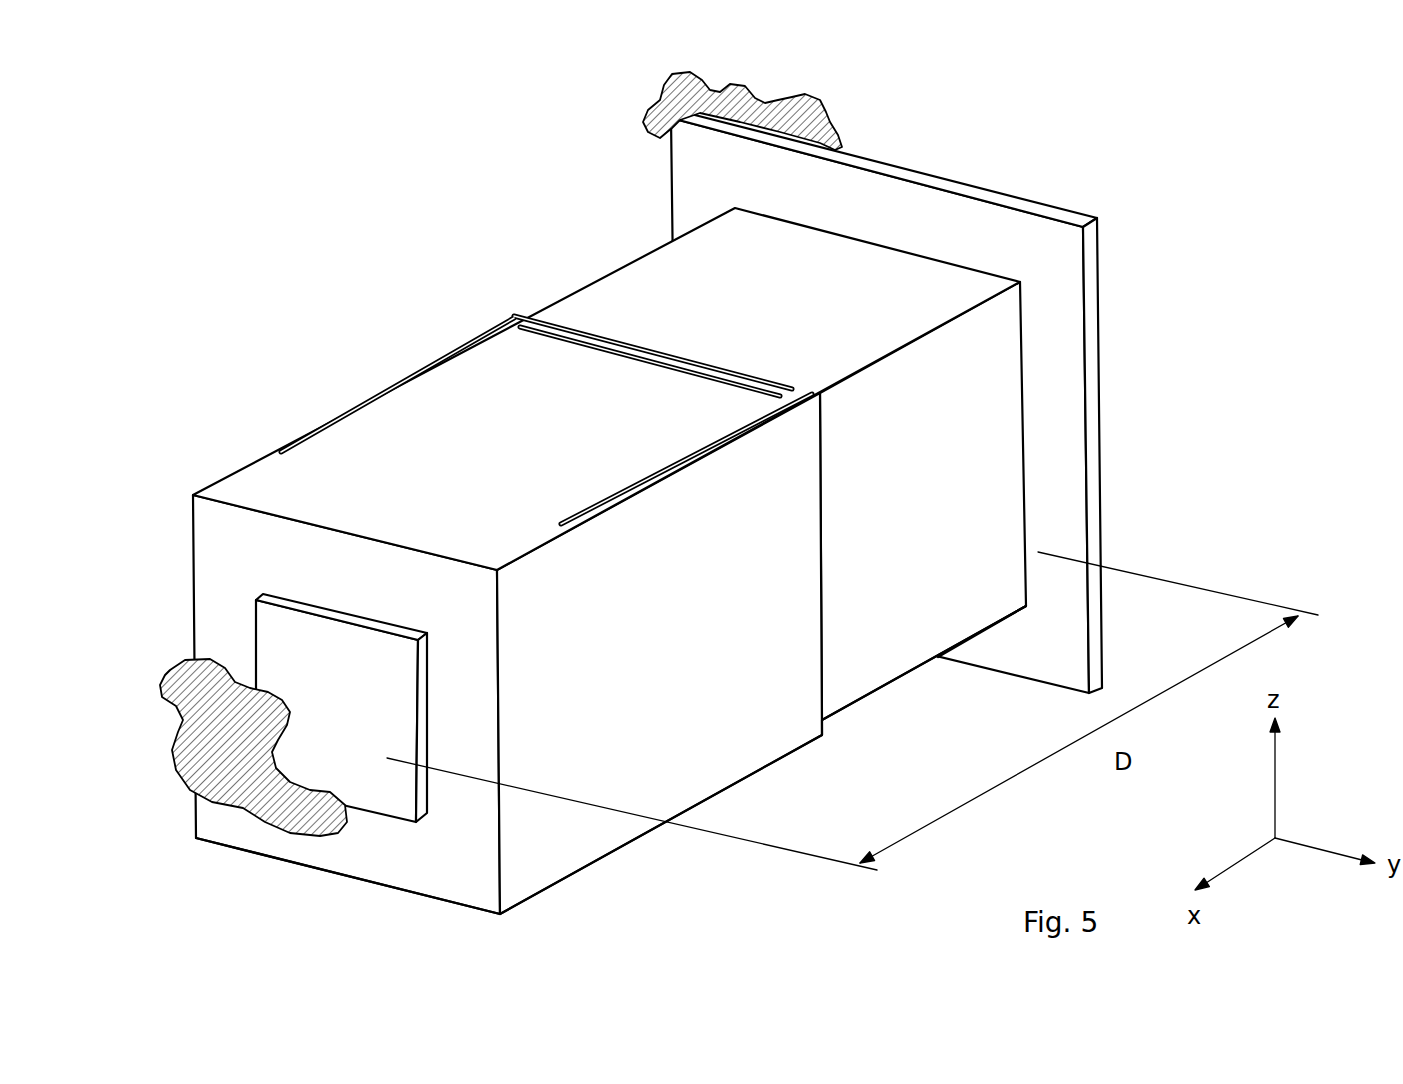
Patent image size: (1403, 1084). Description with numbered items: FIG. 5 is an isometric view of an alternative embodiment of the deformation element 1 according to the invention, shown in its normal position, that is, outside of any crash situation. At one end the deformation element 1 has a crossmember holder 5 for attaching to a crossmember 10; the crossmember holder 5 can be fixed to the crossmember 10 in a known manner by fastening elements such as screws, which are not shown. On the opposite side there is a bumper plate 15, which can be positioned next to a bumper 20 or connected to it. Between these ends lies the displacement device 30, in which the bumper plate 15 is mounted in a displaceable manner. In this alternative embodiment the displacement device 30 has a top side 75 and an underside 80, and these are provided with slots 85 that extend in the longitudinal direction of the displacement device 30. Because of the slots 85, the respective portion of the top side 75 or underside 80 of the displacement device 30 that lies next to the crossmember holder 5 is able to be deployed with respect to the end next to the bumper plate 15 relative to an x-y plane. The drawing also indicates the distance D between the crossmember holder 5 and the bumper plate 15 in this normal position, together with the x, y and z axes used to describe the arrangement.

The deformation element 1 is at (1135, 235).
The crossmember holder 5 is at (690, 187).
The crossmember 10 is at (803, 122).
The bumper plate 15 is at (272, 630).
The bumper 20 is at (210, 712).
The displacement device 30 is at (387, 512).
The top side 75 is at (498, 383).
The underside 80 is at (602, 860).
The slots 85 is at (385, 380).